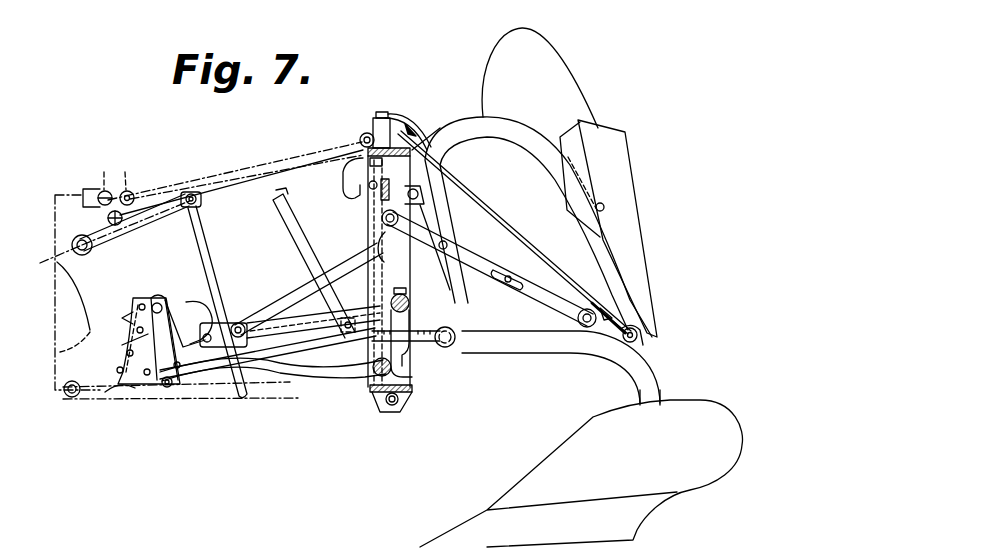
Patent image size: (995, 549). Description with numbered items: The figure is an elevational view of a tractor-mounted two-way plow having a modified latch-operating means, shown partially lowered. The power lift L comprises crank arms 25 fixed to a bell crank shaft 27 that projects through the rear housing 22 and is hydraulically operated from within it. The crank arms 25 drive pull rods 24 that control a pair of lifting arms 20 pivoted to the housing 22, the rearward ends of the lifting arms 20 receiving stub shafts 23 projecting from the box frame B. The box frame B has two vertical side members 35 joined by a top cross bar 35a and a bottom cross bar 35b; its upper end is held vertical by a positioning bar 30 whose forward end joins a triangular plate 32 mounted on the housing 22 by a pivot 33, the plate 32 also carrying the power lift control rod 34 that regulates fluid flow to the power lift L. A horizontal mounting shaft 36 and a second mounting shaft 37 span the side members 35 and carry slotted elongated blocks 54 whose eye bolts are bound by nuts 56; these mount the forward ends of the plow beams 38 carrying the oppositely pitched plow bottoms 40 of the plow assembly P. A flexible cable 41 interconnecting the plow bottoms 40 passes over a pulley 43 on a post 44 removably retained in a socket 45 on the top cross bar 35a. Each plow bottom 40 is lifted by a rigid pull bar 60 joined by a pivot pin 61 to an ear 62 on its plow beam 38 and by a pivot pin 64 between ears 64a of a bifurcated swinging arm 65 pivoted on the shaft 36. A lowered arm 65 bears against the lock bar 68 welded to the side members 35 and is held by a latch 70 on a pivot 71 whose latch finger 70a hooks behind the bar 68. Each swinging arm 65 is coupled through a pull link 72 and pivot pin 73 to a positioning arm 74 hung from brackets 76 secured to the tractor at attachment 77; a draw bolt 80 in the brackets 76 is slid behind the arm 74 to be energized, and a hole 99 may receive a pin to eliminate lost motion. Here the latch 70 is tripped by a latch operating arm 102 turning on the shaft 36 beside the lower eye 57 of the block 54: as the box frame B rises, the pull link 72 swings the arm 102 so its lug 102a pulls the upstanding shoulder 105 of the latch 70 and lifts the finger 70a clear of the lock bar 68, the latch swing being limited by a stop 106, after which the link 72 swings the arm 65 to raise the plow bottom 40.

The power lift mechanism L is at (78, 160).
The lifting arms 20 is at (243, 400).
The rear housing 22 is at (70, 400).
The stub shafts 23 is at (390, 407).
The pull rods 24 is at (203, 236).
The crank arms 25 is at (148, 218).
The bell crank shaft 27 is at (72, 252).
The positioning bar 30 is at (283, 146).
The triangular plate 32 is at (122, 179).
The pivot 33 is at (108, 219).
The power lift control rod 34 is at (91, 180).
The side members 35 is at (430, 282).
The top cross bar 35a is at (226, 548).
The bottom cross bar 35b is at (418, 390).
The horizontal mounting shaft 36 is at (375, 370).
The second horizontal mounting shaft 37 is at (409, 303).
The plow beams 38 is at (464, 132).
The plow bottoms 40 is at (600, 125).
The flexible cable 41 is at (490, 218).
The pulley 43 is at (395, 126).
The post 44 is at (375, 122).
The socket 45 is at (366, 134).
The elongated block 54 is at (458, 322).
The nuts 56 is at (415, 350).
The lower eye 57 is at (380, 376).
The pull bar 60 is at (278, 290).
The pivot pin 61 is at (607, 313).
The ear 62 is at (594, 335).
The pivot pin 64 is at (386, 228).
The ears 64a is at (401, 255).
The swinging control or actuating arm 65 is at (370, 275).
The lock bar 68 is at (426, 188).
The latch 70 is at (216, 306).
The latch finger 70a is at (208, 318).
The pivot 71 is at (434, 162).
The pull link 72 is at (297, 328).
The pivot pin 73 is at (160, 390).
The energizing and positioning arm 74 is at (120, 345).
The brackets 76 is at (174, 318).
The attachment 77 is at (130, 320).
The draw bolt 80 is at (178, 390).
The hole 99 is at (135, 390).
The latch operating and control trip arm 102 is at (362, 216).
The lug 102a is at (278, 202).
The upstanding shoulder 105 is at (352, 186).
The stop 106 is at (350, 200).
The box frame B is at (416, 418).
The plow assembly P is at (674, 138).